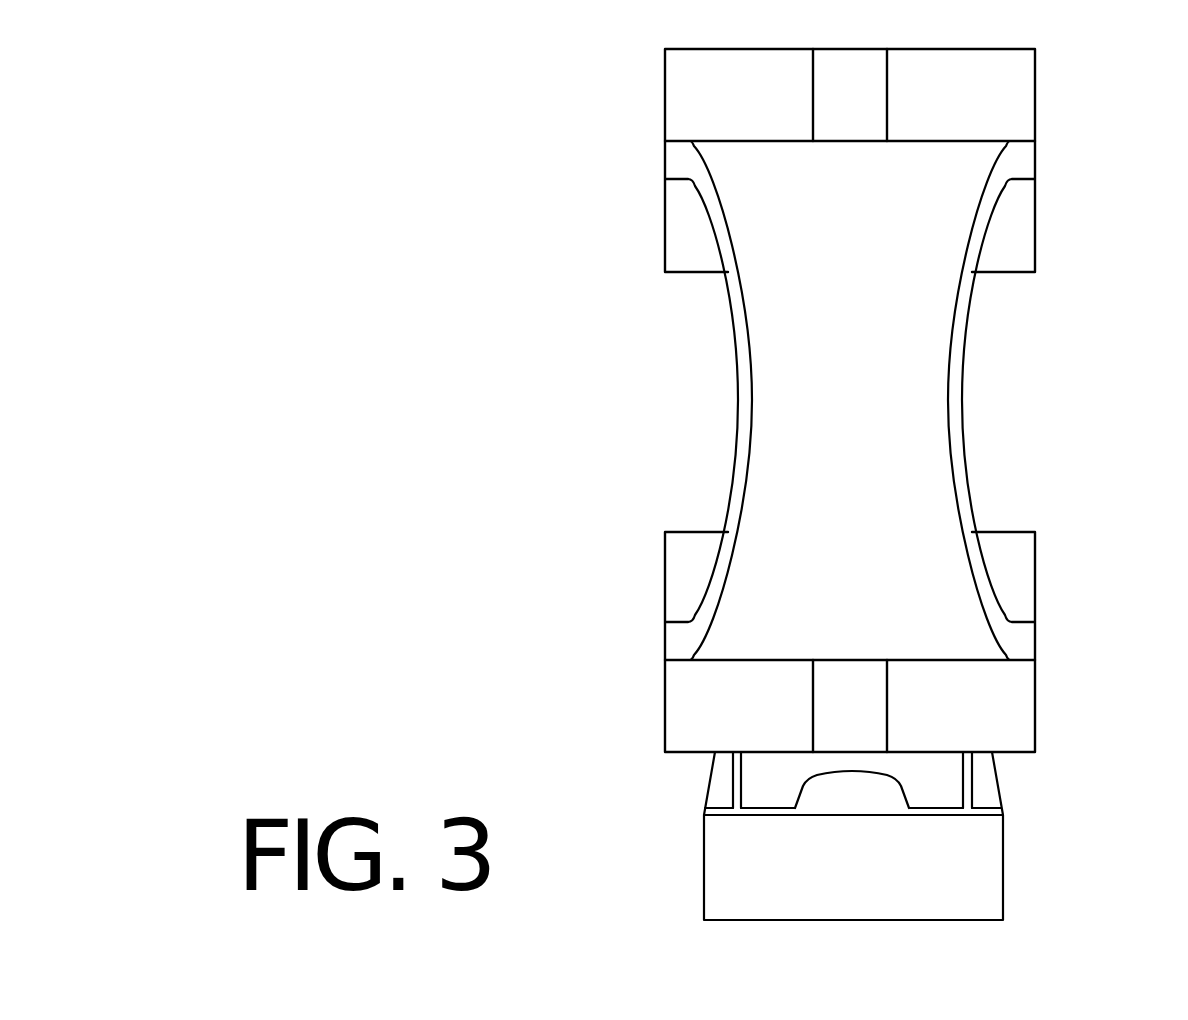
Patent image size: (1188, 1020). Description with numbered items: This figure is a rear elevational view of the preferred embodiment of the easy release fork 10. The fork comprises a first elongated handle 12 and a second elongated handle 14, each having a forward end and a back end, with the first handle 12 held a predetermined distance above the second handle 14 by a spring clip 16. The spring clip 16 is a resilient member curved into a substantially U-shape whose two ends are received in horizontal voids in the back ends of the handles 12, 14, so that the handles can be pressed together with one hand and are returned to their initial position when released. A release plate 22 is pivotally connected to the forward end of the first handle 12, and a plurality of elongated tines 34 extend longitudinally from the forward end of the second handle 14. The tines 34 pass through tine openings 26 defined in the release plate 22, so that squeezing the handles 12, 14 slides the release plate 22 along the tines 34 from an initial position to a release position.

The easy release fork 10 is at (435, 260).
The first elongated handle 12 is at (1020, 102).
The second elongated handle 14 is at (1018, 572).
The spring clip 16 is at (877, 467).
The release plate 22 is at (879, 892).
The tine openings 26 is at (740, 770).
The tines 34 is at (760, 791).